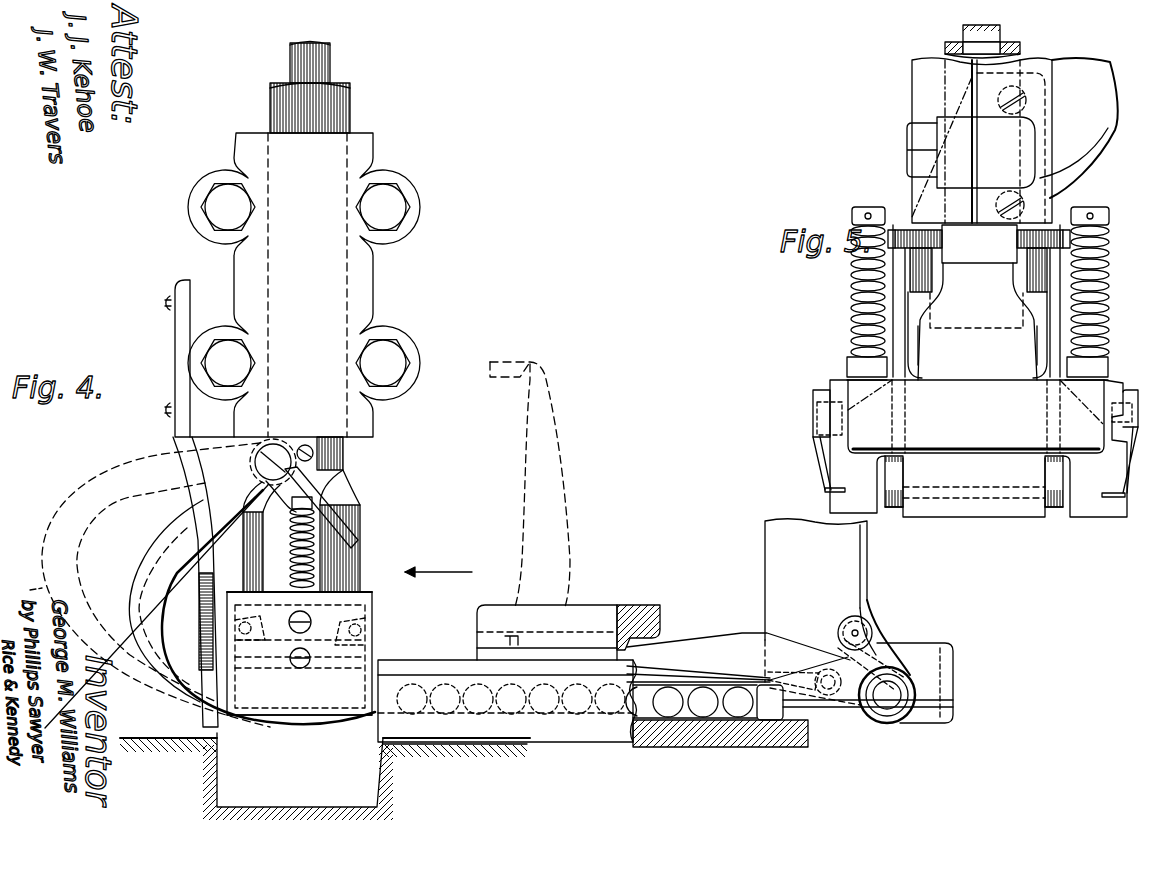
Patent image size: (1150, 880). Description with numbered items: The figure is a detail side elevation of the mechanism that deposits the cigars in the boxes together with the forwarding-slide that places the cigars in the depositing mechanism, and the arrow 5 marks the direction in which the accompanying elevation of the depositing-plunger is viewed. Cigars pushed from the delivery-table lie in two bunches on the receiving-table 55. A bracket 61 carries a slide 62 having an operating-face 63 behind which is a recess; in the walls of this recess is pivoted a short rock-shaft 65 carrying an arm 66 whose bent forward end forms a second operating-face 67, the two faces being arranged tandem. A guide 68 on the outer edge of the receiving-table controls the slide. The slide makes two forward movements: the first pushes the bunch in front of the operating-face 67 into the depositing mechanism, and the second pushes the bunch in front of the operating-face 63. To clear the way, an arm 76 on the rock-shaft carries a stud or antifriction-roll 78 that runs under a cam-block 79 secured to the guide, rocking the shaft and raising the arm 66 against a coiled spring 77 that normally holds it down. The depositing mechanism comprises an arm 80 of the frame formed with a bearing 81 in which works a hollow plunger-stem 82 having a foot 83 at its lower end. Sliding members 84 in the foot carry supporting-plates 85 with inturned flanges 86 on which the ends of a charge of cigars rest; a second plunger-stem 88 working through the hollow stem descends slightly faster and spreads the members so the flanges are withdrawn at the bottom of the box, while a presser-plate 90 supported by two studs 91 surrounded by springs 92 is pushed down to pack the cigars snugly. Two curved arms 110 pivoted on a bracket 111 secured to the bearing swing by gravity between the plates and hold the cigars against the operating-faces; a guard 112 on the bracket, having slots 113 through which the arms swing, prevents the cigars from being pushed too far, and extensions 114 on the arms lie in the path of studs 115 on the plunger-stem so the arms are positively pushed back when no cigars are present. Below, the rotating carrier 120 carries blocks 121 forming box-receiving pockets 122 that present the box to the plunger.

In FIG. 4, the arrow 5 is at (438, 562).
In FIG. 4, the receiving-table 55 is at (704, 748).
In FIG. 4, the bracket 61 is at (816, 600).
In FIG. 4, the slide 62 is at (950, 660).
In FIG. 4, the operating-face 63 is at (770, 702).
In FIG. 4, the rock-shaft 65 is at (887, 695).
In FIG. 4, the arm 66 is at (566, 487).
In FIG. 4, the operating-face 67 is at (553, 712).
In FIG. 4, the guide 68 is at (452, 664).
In FIG. 4, the arm 76 is at (882, 648).
In FIG. 4, the coiled spring 77 is at (895, 680).
In FIG. 4, the stud or antifriction-roll 78 is at (838, 630).
In FIG. 4, the cam-block 79 is at (642, 606).
In FIG. 5, the arm 80 is at (1079, 128).
In FIG. 4, the bearing 81 is at (292, 430).
In FIG. 5, the bearing 81 is at (979, 140).
In FIG. 4, the hollow plunger-stem 82 is at (368, 550).
In FIG. 5, the hollow plunger-stem 82 is at (1020, 53).
In FIG. 4, the foot 83 is at (299, 601).
In FIG. 5, the foot 83 is at (845, 380).
In FIG. 4, the sliding members 84 is at (370, 612).
In FIG. 5, the sliding members 84 is at (828, 393).
In FIG. 4, the supporting-plates 85 is at (300, 673).
In FIG. 5, the supporting-plates 85 is at (812, 460).
In FIG. 4, the inturned flanges 86 is at (326, 720).
In FIG. 5, the inturned flanges 86 is at (826, 491).
In FIG. 4, the second plunger-stem 88 is at (310, 63).
In FIG. 5, the second plunger-stem 88 is at (981, 38).
In FIG. 4, the presser-plate 90 is at (330, 672).
In FIG. 5, the presser-plate 90 is at (976, 440).
In FIG. 4, the studs 91 is at (284, 502).
In FIG. 5, the studs 91 is at (852, 288).
In FIG. 4, the springs 92 is at (289, 538).
In FIG. 5, the springs 92 is at (853, 312).
In FIG. 4, the curved arms 110 is at (270, 740).
In FIG. 5, the curved arms 110 is at (897, 346).
In FIG. 4, the bracket 111 is at (254, 462).
In FIG. 5, the bracket 111 is at (1024, 286).
In FIG. 4, the guard 112 is at (205, 483).
In FIG. 5, the guard 112 is at (978, 448).
In FIG. 5, the slots 113 is at (903, 510).
In FIG. 4, the extensions 114 is at (336, 508).
In FIG. 4, the studs 115 is at (314, 453).
In FIG. 5, the studs 115 is at (1012, 240).
In FIG. 4, the rotating carrier 120 is at (325, 732).
In FIG. 4, the blocks 121 is at (323, 779).
In FIG. 4, the box-receiving pockets 122 is at (300, 770).